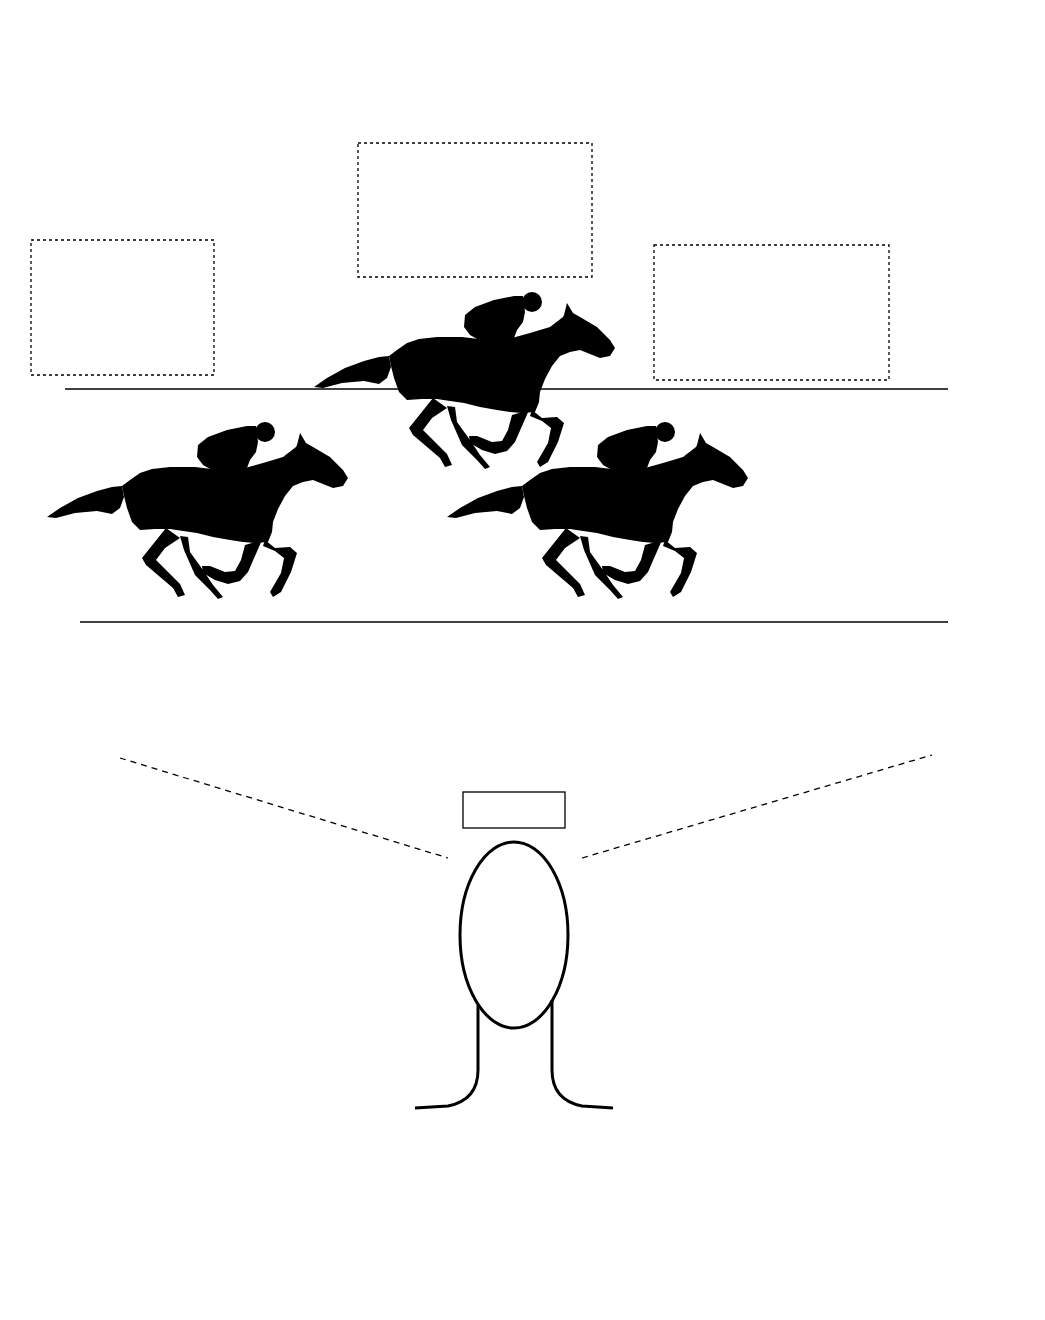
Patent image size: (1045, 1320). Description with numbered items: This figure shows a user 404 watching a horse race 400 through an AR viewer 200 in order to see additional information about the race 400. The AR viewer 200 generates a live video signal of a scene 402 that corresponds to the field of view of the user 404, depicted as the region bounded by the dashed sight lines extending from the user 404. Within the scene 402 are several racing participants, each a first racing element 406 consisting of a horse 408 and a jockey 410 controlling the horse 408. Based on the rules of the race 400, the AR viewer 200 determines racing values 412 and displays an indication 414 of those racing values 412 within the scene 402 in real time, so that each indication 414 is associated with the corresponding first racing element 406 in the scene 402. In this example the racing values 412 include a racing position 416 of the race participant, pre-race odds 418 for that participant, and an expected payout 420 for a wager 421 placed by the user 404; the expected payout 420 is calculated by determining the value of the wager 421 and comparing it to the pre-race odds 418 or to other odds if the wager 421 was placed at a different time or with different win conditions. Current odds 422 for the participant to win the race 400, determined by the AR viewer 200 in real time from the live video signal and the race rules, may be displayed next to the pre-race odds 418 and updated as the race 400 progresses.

The horse race 400 is at (152, 80).
The scene 402 is at (526, 806).
The user 404 is at (443, 947).
The AR viewer 200 is at (514, 810).
The first racing element 406 is at (360, 320).
The horse 408 is at (378, 340).
The jockey 410 is at (443, 307).
The racing values 412 is at (52, 207).
The indication 414 is at (173, 238).
The racing position 416 is at (358, 203).
The pre-race odds 418 is at (358, 177).
The expected payout 420 is at (358, 270).
The wager 421 is at (358, 248).
The current odds 422 is at (358, 227).